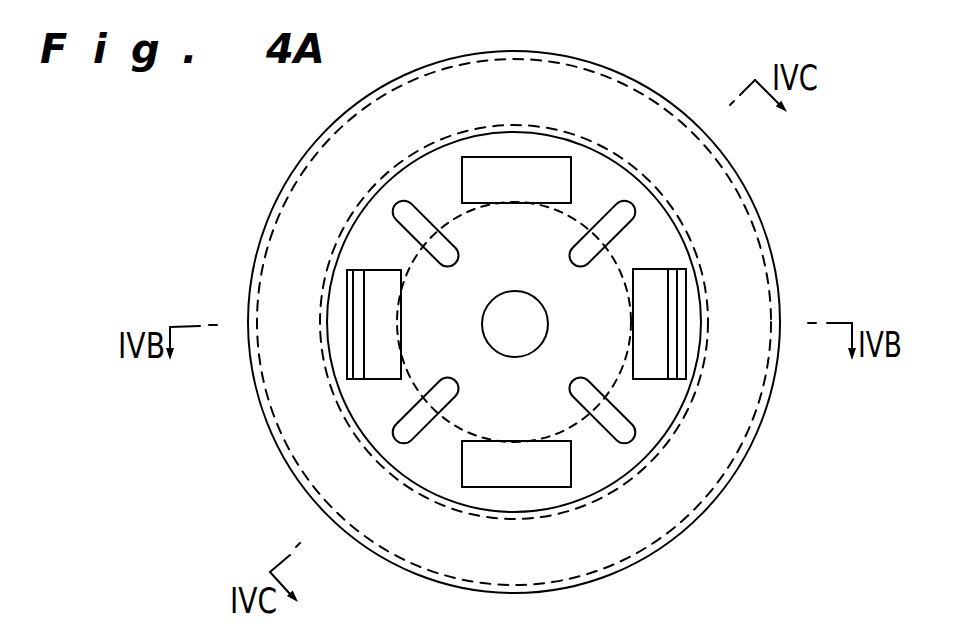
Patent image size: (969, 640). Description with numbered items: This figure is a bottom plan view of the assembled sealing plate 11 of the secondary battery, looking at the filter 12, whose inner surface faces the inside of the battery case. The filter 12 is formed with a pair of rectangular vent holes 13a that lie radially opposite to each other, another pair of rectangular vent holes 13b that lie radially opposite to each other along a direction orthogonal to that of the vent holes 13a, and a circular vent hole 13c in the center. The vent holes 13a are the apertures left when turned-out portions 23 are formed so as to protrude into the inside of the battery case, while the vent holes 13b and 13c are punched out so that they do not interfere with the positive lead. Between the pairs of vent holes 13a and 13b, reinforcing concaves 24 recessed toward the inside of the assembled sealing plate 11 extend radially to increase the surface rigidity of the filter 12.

The assembled sealing plate 11 is at (256, 208).
The filter 12 is at (660, 412).
The vent holes 13a is at (390, 380).
The vent holes 13b is at (572, 172).
The vent hole 13c is at (548, 324).
The turned-out portions 23 is at (358, 332).
The reinforcing concaves 24 is at (412, 210).